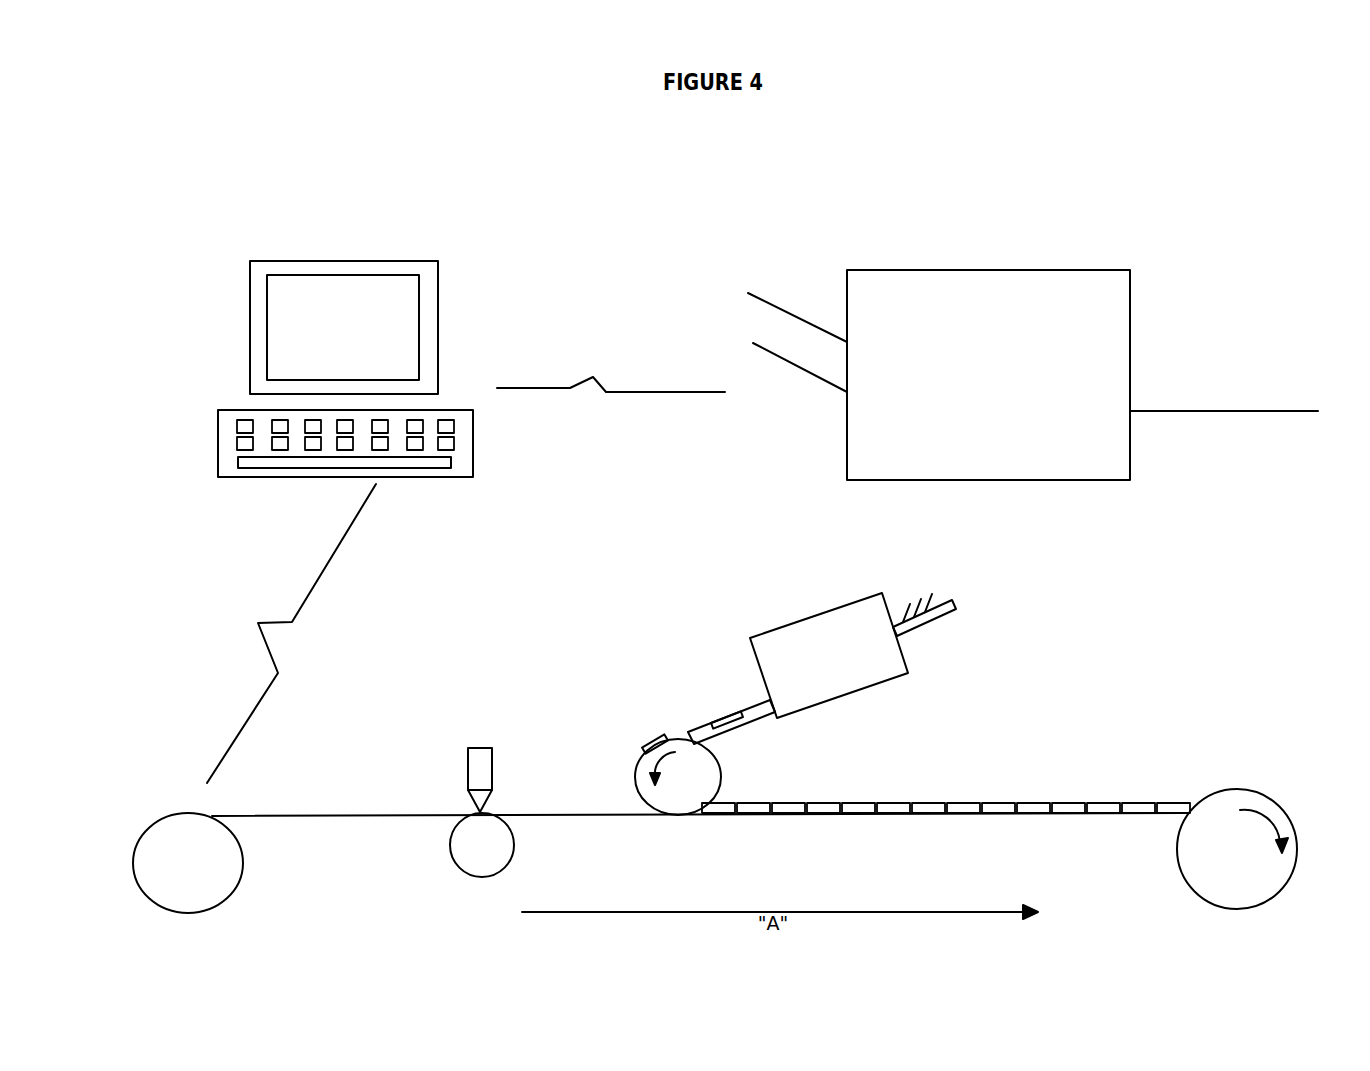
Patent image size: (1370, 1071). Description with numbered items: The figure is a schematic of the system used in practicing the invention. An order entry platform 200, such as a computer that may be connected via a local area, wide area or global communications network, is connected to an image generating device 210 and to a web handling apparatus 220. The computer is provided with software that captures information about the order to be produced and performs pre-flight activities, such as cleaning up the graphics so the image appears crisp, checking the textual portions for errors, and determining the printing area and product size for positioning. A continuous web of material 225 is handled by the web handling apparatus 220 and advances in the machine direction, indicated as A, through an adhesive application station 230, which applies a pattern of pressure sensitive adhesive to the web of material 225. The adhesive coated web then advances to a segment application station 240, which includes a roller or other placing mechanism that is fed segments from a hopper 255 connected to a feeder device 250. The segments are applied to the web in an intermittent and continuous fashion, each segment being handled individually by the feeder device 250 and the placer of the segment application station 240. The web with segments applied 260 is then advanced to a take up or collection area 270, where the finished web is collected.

The order entry platform 200 is at (248, 250).
The image generating device 210 is at (988, 375).
The web handling apparatus 220 is at (220, 903).
The continuous web of material 225 is at (320, 812).
The adhesive application station 230 is at (468, 763).
The segment application station 240 is at (638, 760).
The feeder device 250 is at (787, 625).
The hopper 255 is at (940, 588).
The web with segments applied 260 is at (993, 814).
The take up or collection area 270 is at (1260, 785).